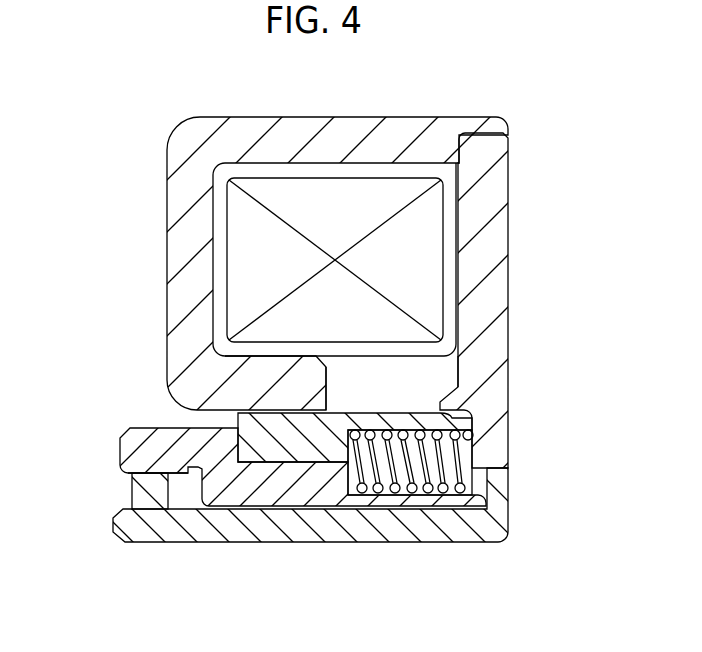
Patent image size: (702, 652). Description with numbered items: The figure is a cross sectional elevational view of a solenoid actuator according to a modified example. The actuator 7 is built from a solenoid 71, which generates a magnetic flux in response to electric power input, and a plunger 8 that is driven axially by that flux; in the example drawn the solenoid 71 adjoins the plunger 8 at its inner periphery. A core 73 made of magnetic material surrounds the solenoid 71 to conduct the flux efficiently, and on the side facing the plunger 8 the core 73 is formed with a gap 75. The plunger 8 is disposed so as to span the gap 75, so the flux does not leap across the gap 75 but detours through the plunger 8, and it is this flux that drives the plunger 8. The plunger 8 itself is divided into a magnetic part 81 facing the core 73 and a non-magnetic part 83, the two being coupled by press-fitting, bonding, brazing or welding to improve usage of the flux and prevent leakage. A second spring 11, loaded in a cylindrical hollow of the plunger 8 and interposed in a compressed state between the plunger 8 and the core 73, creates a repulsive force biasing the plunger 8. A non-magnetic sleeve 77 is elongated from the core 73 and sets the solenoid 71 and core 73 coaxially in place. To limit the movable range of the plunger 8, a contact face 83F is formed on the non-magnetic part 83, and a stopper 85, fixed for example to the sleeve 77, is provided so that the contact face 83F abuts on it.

The actuator 7 is at (398, 90).
The solenoid 71 is at (285, 195).
The core 73 is at (496, 177).
The gap 75 is at (402, 383).
The second spring 11 is at (460, 421).
The plunger 8 is at (303, 525).
The magnetic part 81 is at (270, 452).
The non-magnetic part 83 is at (217, 490).
The contact face 83F is at (194, 490).
The stopper 85 is at (132, 489).
The sleeve 77 is at (325, 532).